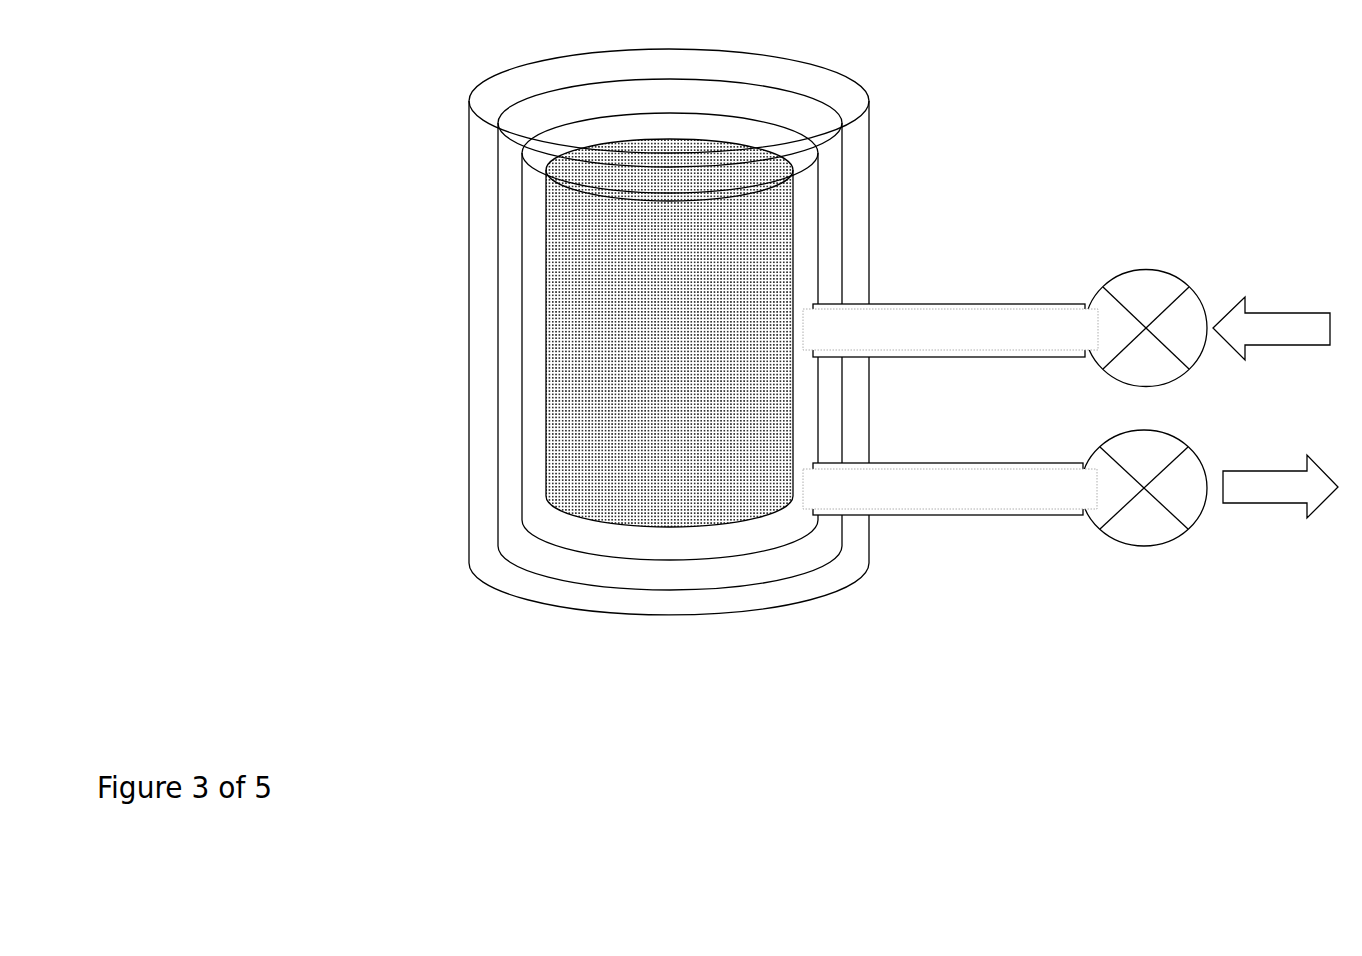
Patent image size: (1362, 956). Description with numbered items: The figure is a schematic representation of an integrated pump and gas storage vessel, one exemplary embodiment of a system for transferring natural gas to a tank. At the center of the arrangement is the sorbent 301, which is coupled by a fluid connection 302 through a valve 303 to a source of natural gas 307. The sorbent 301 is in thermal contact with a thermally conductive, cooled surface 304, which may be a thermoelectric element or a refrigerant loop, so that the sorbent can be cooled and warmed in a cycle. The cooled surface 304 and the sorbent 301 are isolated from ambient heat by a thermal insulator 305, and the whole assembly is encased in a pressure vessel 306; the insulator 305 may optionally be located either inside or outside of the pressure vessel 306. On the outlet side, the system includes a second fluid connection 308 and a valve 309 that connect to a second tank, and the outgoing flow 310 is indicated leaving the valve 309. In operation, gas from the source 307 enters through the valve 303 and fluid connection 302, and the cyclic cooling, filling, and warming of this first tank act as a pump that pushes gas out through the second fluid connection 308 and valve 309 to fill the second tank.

The sorbent 301 is at (669, 333).
The fluid connection 302 is at (950, 330).
The valve 303 is at (1146, 328).
The cooled surface 304 is at (670, 328).
The thermal insulator 305 is at (670, 328).
The pressure vessel 306 is at (669, 326).
The source of natural gas 307 is at (1271, 328).
The second fluid connection 308 is at (950, 489).
The valve 309 is at (1144, 488).
The outlet flow 310 is at (1280, 486).